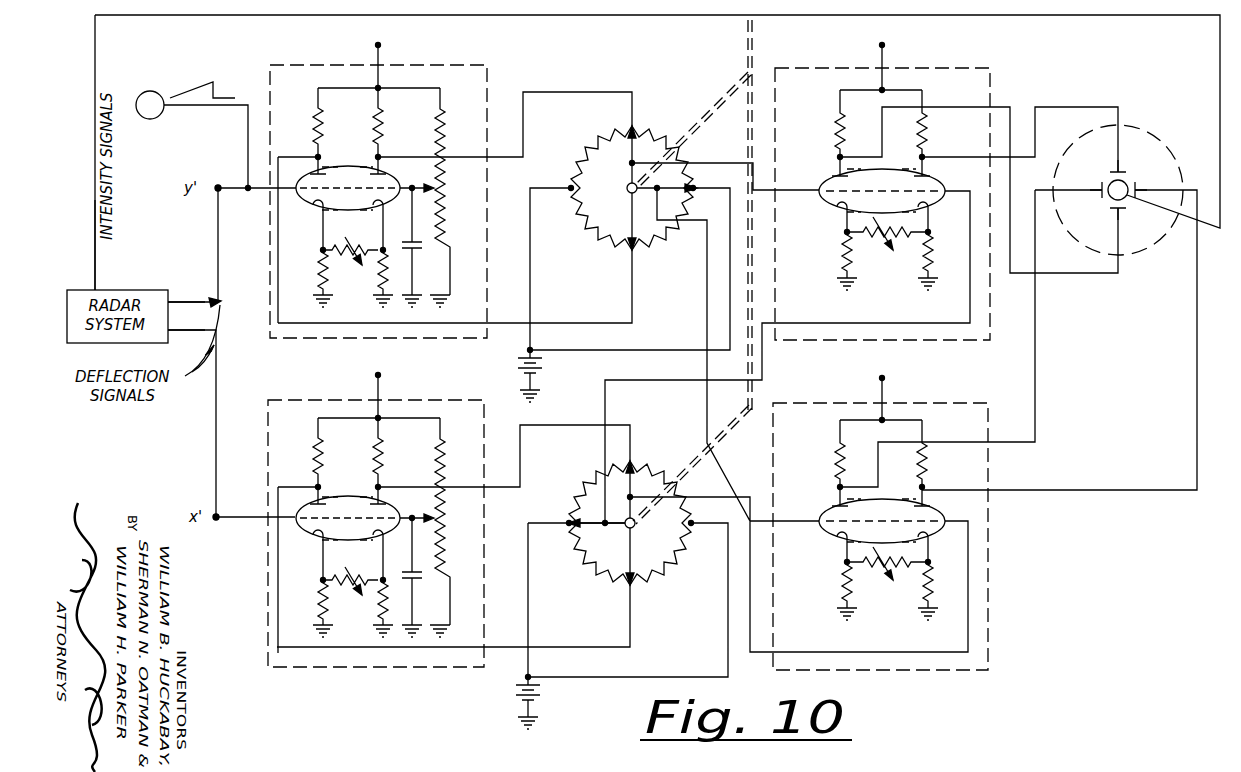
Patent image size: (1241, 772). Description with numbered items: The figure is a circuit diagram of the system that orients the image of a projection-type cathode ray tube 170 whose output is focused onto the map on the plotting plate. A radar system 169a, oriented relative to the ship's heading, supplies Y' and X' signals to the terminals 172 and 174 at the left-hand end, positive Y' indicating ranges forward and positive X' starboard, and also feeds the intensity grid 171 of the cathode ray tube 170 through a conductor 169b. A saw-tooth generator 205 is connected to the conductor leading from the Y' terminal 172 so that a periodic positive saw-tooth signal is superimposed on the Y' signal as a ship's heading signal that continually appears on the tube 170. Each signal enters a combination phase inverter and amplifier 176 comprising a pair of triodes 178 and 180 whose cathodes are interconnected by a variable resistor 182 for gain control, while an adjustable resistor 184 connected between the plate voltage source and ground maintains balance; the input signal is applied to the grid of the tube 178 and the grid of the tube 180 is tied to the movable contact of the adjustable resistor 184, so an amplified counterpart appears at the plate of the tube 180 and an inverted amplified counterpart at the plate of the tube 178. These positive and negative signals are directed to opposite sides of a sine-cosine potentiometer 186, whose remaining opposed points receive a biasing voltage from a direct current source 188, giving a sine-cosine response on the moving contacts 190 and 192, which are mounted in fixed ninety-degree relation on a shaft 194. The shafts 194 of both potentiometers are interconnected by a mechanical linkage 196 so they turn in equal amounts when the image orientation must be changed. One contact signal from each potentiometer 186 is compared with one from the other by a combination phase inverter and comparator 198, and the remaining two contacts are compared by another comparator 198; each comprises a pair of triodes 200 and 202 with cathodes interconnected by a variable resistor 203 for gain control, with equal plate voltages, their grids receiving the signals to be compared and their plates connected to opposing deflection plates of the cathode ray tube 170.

The saw-tooth generator 205 is at (154, 92).
The Y' terminal 172 is at (232, 184).
The X' terminal 174 is at (222, 514).
The radar system 169a is at (146, 290).
The conductor 169b is at (97, 268).
The combination phase inverter and amplifier 176 is at (291, 70).
The triode 178 is at (308, 208).
The triode 180 is at (390, 179).
The variable resistor 182 is at (371, 236).
The adjustable resistor 184 is at (434, 190).
The sine-cosine potentiometer 186 is at (599, 470).
The direct current source 188 is at (561, 692).
The moving contact 190 is at (633, 497).
The moving contact 192 is at (588, 527).
The shaft 194 is at (636, 527).
The mechanical linkage 196 is at (720, 106).
The combination phase inverter and comparator 198 is at (978, 68).
The triode 200 is at (832, 216).
The triode 202 is at (933, 212).
The variable resistor 203 is at (876, 243).
The cathode ray tube 170 is at (1152, 130).
The intensity grid 171 is at (1125, 183).